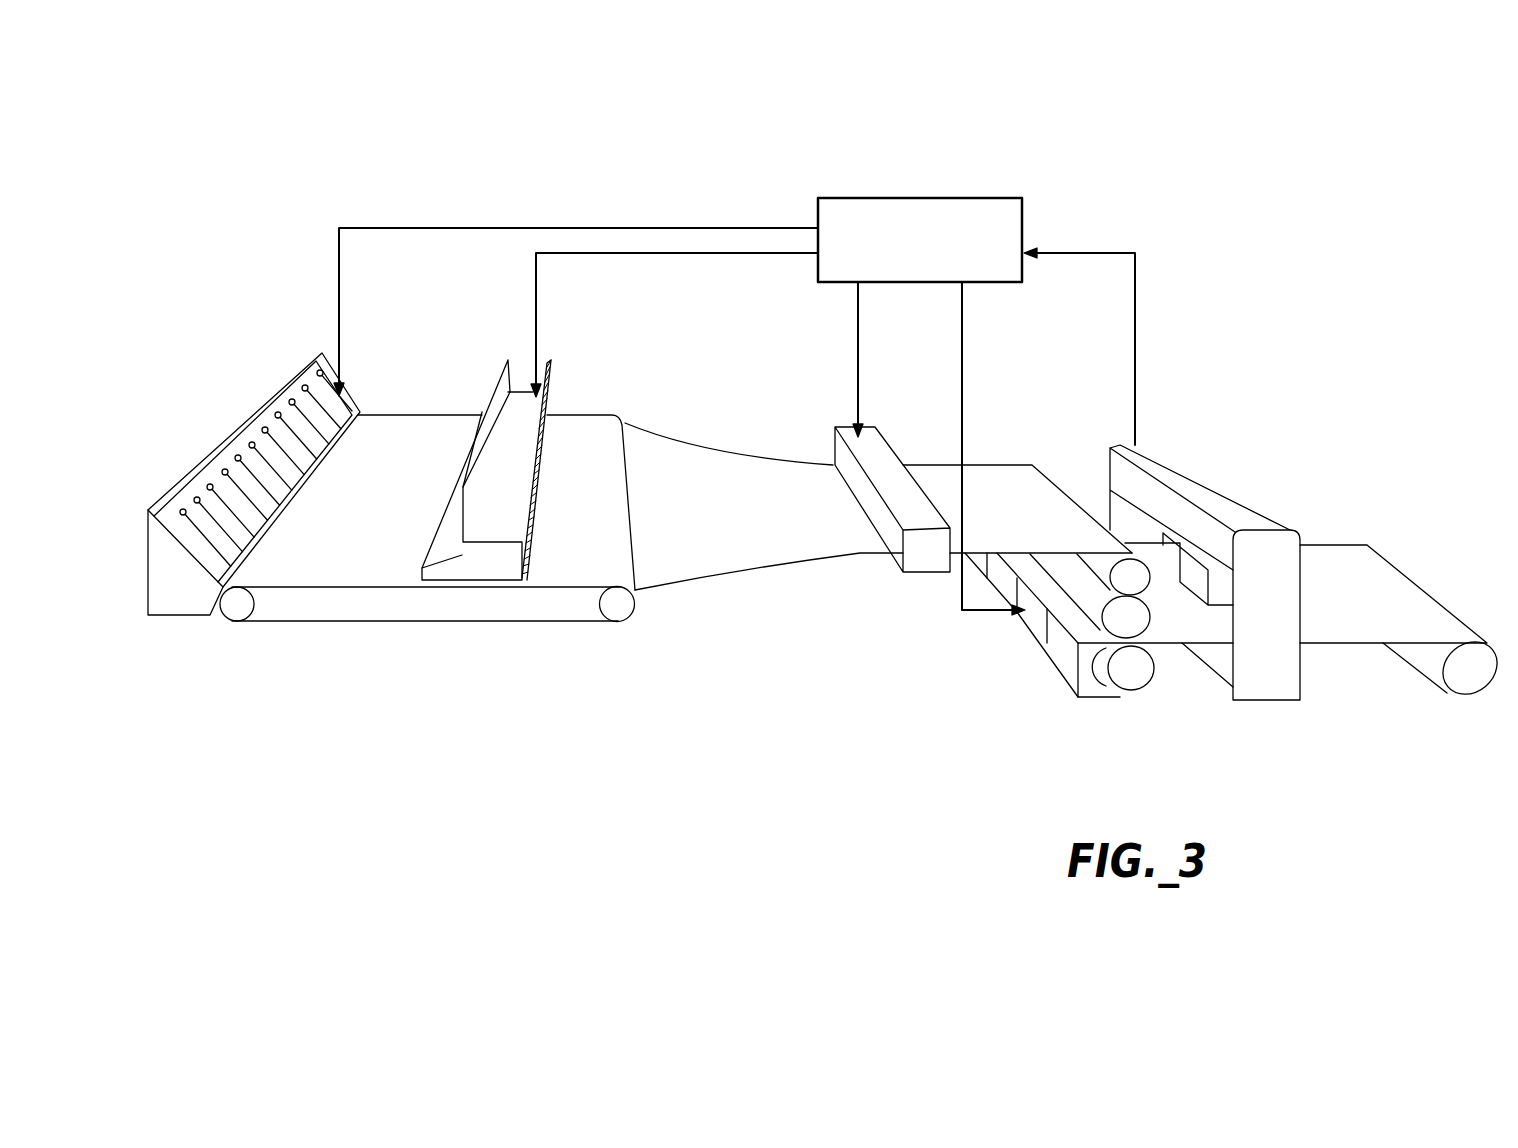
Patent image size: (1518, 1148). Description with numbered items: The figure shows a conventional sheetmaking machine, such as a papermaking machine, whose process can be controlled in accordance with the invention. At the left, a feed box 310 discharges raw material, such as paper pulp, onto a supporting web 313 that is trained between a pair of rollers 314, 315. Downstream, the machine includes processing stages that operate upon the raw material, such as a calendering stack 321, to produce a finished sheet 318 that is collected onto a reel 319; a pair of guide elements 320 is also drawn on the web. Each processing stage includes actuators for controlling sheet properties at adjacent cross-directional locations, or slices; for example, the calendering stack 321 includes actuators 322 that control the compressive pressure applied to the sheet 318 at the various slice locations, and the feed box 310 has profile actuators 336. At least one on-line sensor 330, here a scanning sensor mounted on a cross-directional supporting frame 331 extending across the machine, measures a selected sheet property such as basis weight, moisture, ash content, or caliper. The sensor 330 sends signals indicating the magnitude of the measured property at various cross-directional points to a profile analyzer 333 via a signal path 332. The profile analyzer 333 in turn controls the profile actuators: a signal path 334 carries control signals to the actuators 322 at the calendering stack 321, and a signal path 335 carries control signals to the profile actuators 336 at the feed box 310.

The feed box 310 is at (162, 613).
The supporting web 313 is at (422, 623).
The roller 314 is at (237, 612).
The roller 315 is at (618, 612).
The finished sheet 318 is at (1366, 612).
The reel 319 is at (1468, 692).
The guide walls 320 is at (518, 395).
The calendering stack 321 is at (1116, 712).
The actuators 322 is at (1062, 662).
The on-line sensor 330 is at (1202, 587).
The cross-directional supporting frame 331 is at (1187, 473).
The signal path 332 is at (1135, 325).
The profile analyzer 333 is at (915, 198).
The signal path 334 is at (962, 325).
The signal path 335 is at (605, 227).
The profile actuators 336 is at (285, 406).